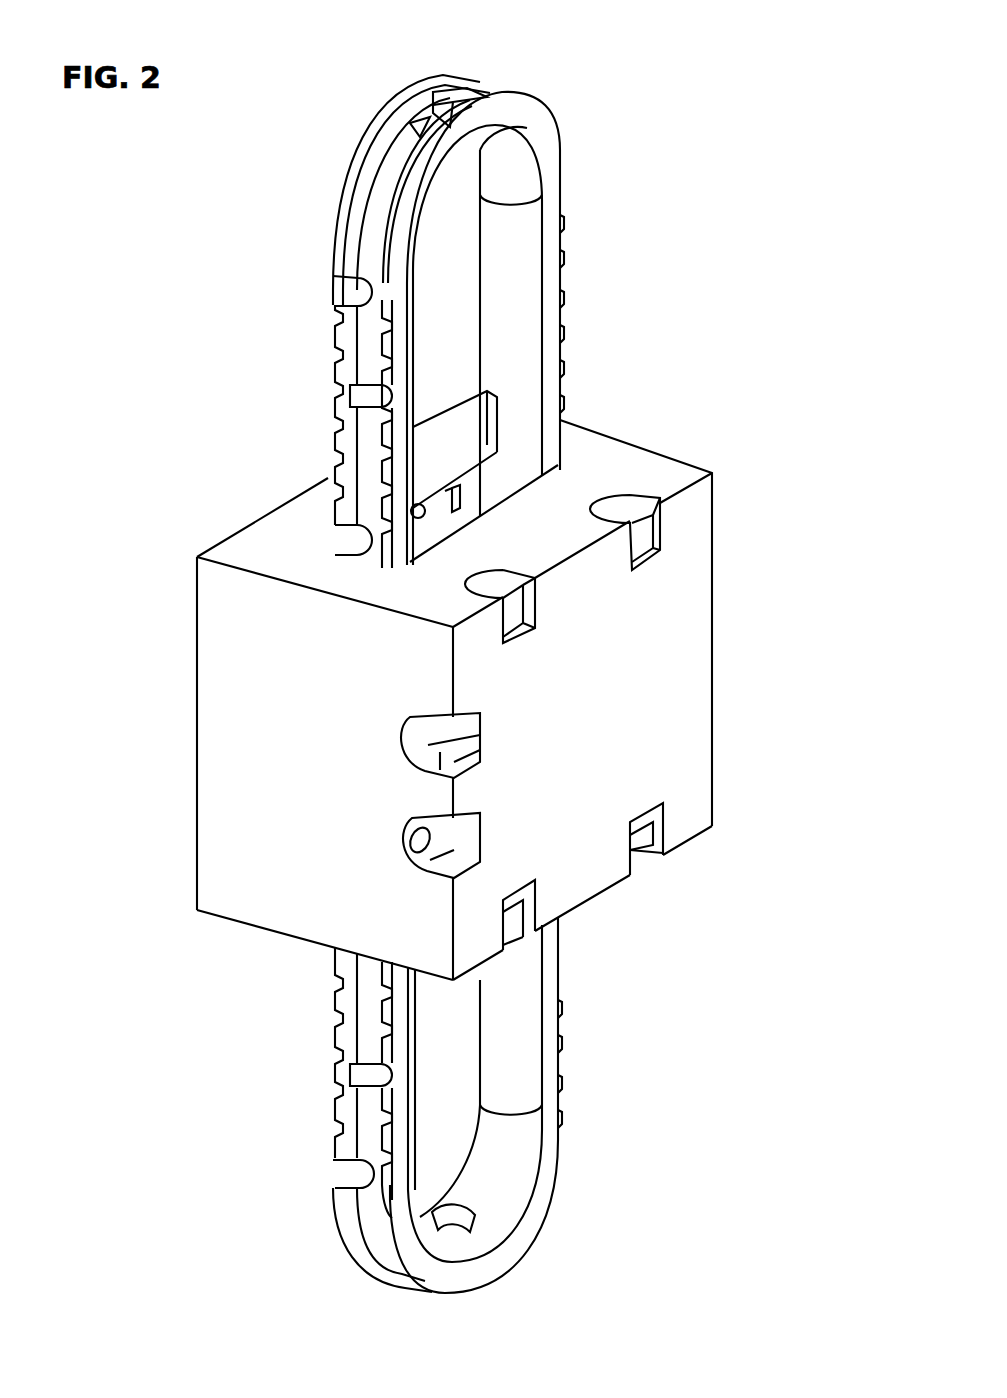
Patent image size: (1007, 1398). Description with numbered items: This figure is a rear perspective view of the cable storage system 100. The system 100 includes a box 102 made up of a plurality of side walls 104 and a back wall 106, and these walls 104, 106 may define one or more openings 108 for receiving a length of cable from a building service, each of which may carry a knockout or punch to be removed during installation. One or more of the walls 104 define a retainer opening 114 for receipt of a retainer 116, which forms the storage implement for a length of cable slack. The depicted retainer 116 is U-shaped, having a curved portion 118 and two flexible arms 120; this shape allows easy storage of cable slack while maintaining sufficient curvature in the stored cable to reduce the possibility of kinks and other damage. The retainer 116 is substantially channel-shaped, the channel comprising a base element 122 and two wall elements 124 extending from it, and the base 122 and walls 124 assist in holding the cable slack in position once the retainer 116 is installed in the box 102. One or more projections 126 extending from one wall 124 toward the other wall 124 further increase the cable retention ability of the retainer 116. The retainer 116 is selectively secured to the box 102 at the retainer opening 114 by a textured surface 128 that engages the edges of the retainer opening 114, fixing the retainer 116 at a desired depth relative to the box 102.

The cable storage system 100 is at (737, 166).
The box 102 is at (737, 766).
The side walls 104 is at (256, 543).
The back wall 106 is at (666, 623).
The openings 108 is at (634, 508).
The retainer opening 114 is at (440, 512).
The retainer 116 is at (595, 140).
The curved portion 118 is at (476, 90).
The flexible arms 120 is at (527, 393).
The base element 122 is at (497, 167).
The wall elements 124 is at (527, 113).
The projections 126 is at (346, 289).
The textured surface 128 is at (333, 361).